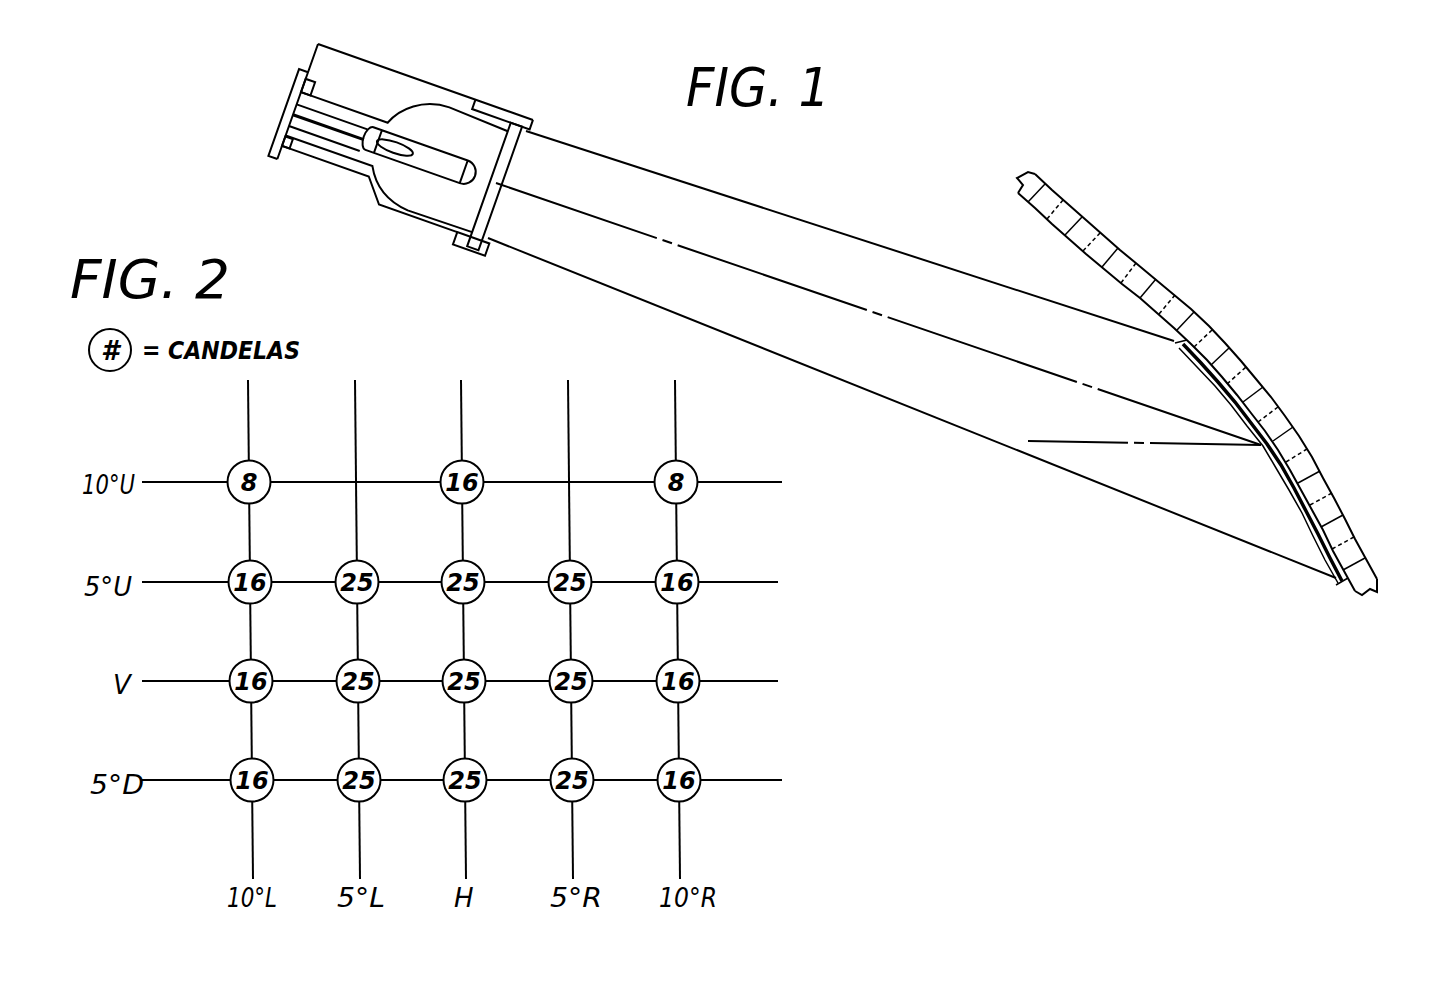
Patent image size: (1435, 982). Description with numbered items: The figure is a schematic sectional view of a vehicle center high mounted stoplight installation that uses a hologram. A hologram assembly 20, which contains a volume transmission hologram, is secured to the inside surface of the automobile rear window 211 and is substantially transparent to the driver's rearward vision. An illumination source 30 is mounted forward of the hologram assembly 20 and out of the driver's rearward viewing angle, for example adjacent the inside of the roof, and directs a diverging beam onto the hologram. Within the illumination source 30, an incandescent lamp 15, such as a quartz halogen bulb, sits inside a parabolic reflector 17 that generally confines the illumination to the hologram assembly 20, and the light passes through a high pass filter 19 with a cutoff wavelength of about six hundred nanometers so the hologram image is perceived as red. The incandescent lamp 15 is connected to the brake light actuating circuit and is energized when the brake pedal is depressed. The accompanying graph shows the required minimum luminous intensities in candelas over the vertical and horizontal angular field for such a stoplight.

The incandescent lamp 15 is at (465, 163).
The parabolic reflector 17 is at (410, 110).
The high pass filter 19 is at (507, 173).
The hologram assembly 20 is at (1286, 495).
The illumination source 30 is at (322, 207).
The automobile rear window 211 is at (1099, 230).